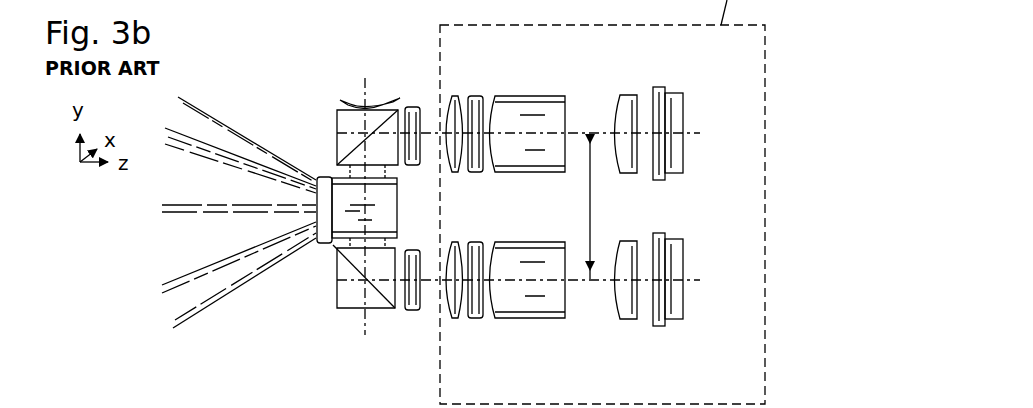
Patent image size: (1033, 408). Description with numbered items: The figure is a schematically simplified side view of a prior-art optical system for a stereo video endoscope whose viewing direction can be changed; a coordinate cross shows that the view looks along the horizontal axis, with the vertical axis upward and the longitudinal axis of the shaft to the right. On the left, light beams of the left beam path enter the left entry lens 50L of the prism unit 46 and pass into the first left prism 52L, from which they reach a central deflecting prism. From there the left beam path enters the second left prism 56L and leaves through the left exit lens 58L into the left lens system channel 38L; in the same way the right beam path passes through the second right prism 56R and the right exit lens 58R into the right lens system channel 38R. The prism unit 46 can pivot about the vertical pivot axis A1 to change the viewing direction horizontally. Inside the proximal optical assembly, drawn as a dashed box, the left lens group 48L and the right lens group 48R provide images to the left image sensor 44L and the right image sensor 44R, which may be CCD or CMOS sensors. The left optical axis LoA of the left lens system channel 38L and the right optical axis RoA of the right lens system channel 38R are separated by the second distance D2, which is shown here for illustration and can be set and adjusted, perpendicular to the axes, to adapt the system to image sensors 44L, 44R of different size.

The prism unit 46 is at (378, 70).
The vertical pivot axis A1 is at (363, 100).
The second left prism 56L is at (347, 150).
The second right prism 56R is at (356, 272).
The left exit lens 58L is at (407, 105).
The right exit lens 58R is at (408, 303).
The left entry lens 50L is at (327, 233).
The first left prism 52L is at (340, 236).
The left lens group 48L is at (525, 90).
The right lens group 48R is at (490, 326).
The left image sensor 44L is at (673, 120).
The right image sensor 44R is at (670, 297).
The left lens system channel 38L is at (637, 108).
The right lens system channel 38R is at (638, 318).
The left optical axis LoA is at (593, 131).
The right optical axis RoA is at (572, 283).
The second distance D2 is at (593, 206).